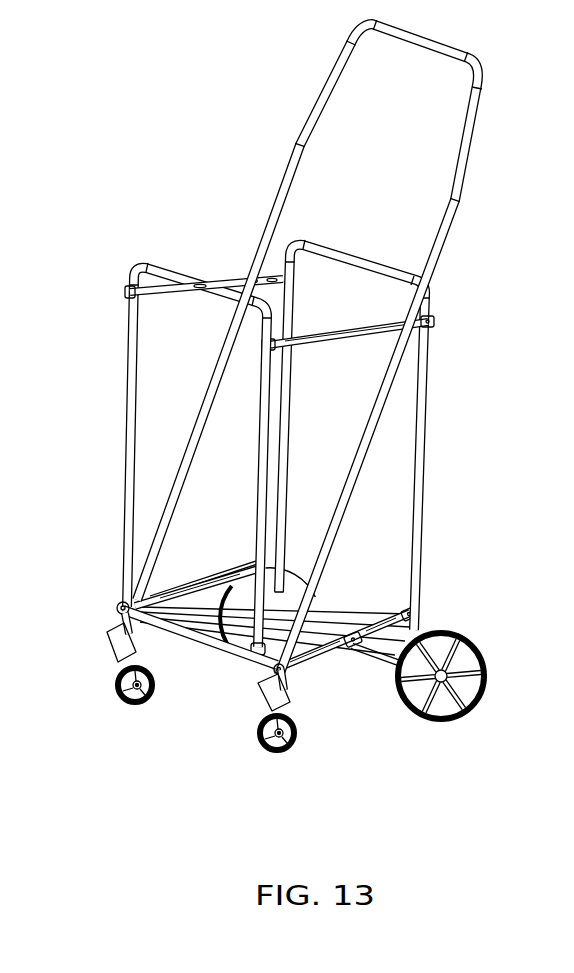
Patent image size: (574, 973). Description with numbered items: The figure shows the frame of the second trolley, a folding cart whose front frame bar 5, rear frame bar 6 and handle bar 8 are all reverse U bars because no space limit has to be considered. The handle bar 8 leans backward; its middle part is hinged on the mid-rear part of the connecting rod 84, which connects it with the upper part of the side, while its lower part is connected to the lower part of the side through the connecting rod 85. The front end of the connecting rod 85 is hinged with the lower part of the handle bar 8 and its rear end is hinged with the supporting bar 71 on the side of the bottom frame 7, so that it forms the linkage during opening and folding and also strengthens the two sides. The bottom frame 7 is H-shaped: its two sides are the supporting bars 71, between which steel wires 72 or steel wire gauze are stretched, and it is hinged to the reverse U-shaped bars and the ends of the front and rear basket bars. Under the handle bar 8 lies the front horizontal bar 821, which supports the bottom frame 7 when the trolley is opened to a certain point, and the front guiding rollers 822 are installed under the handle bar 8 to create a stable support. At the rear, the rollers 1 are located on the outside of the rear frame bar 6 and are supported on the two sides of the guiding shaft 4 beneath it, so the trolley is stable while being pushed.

The roller 1 is at (455, 626).
The guiding shaft 4 is at (383, 665).
The front frame bar 5 is at (119, 386).
The rear frame bar 6 is at (428, 428).
The bottom frame 7 is at (359, 609).
The handle bar 8 is at (289, 135).
The supporting bar 71 is at (184, 589).
The steel wire 72 is at (167, 599).
The connecting bar 84 is at (233, 271).
The connecting bar 85 is at (233, 566).
The front horizontal bar 821 is at (212, 652).
The front guiding roller 822 is at (252, 745).